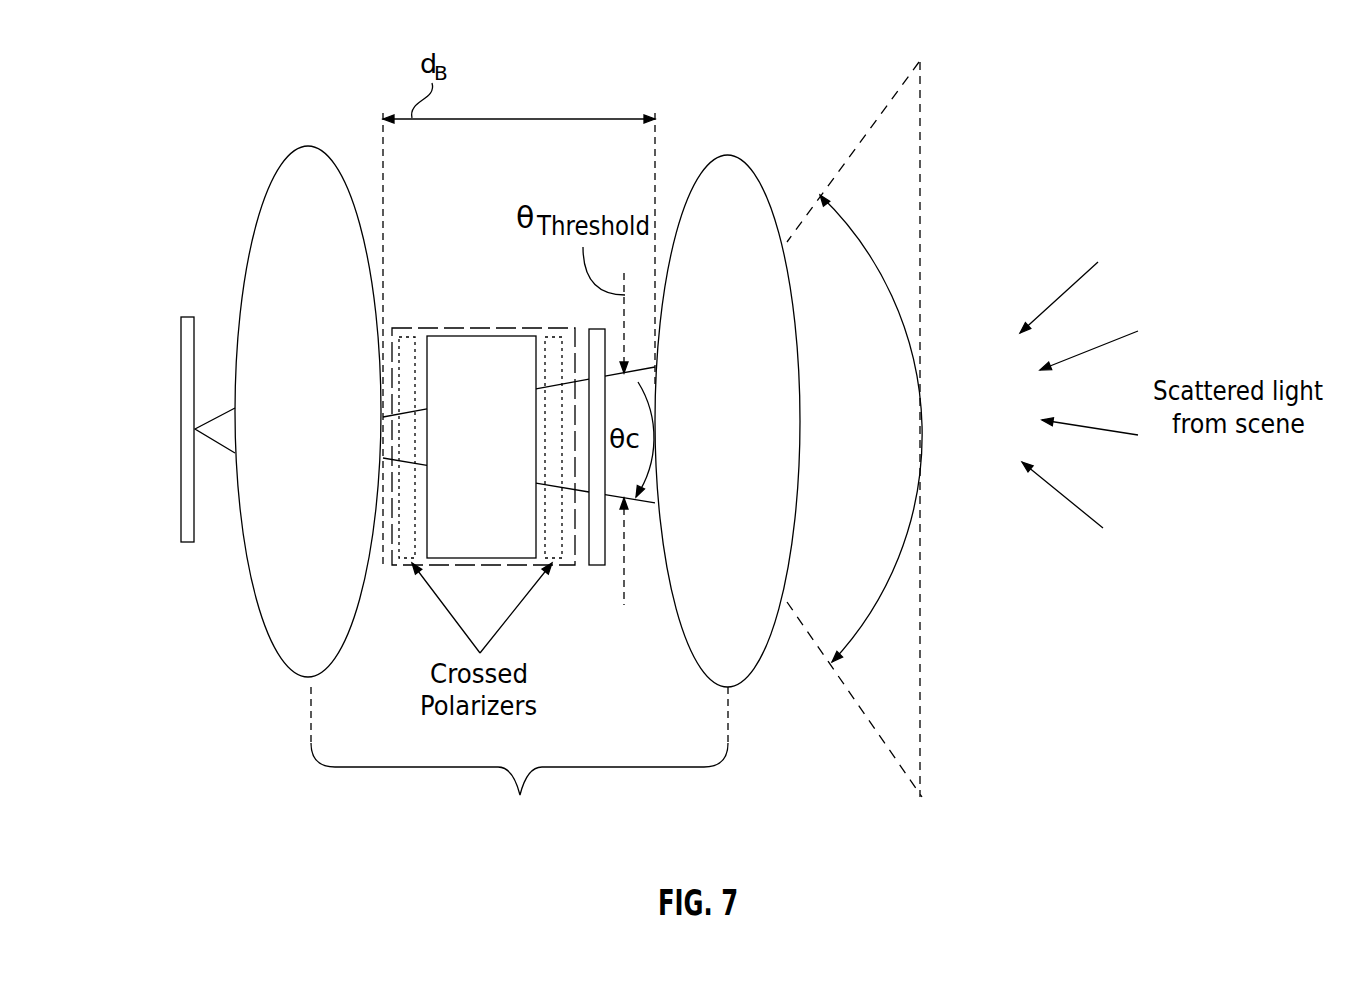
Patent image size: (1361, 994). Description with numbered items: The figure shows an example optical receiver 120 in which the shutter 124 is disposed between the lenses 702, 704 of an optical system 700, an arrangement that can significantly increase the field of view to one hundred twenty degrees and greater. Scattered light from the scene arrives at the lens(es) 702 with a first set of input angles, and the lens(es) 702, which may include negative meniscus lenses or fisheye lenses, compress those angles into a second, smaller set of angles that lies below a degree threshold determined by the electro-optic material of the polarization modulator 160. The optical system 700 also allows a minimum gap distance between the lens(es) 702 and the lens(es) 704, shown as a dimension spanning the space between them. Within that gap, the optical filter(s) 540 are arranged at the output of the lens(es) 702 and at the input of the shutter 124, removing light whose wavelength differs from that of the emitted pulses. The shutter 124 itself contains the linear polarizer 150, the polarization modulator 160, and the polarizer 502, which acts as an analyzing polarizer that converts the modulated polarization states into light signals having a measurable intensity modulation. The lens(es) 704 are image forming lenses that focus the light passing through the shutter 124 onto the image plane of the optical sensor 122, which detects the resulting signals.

The optical receiver 120 is at (990, 62).
The optical sensor 122 is at (194, 543).
The shutter 124 is at (457, 328).
The linear polarizer 150 is at (553, 337).
The polarization modulator 160 is at (458, 543).
The polarizer 502 is at (408, 337).
The optical filter(s) 540 is at (597, 566).
The optical system 700 is at (519, 775).
The lens(es) 702 is at (733, 157).
The lens(es) 704 is at (283, 163).